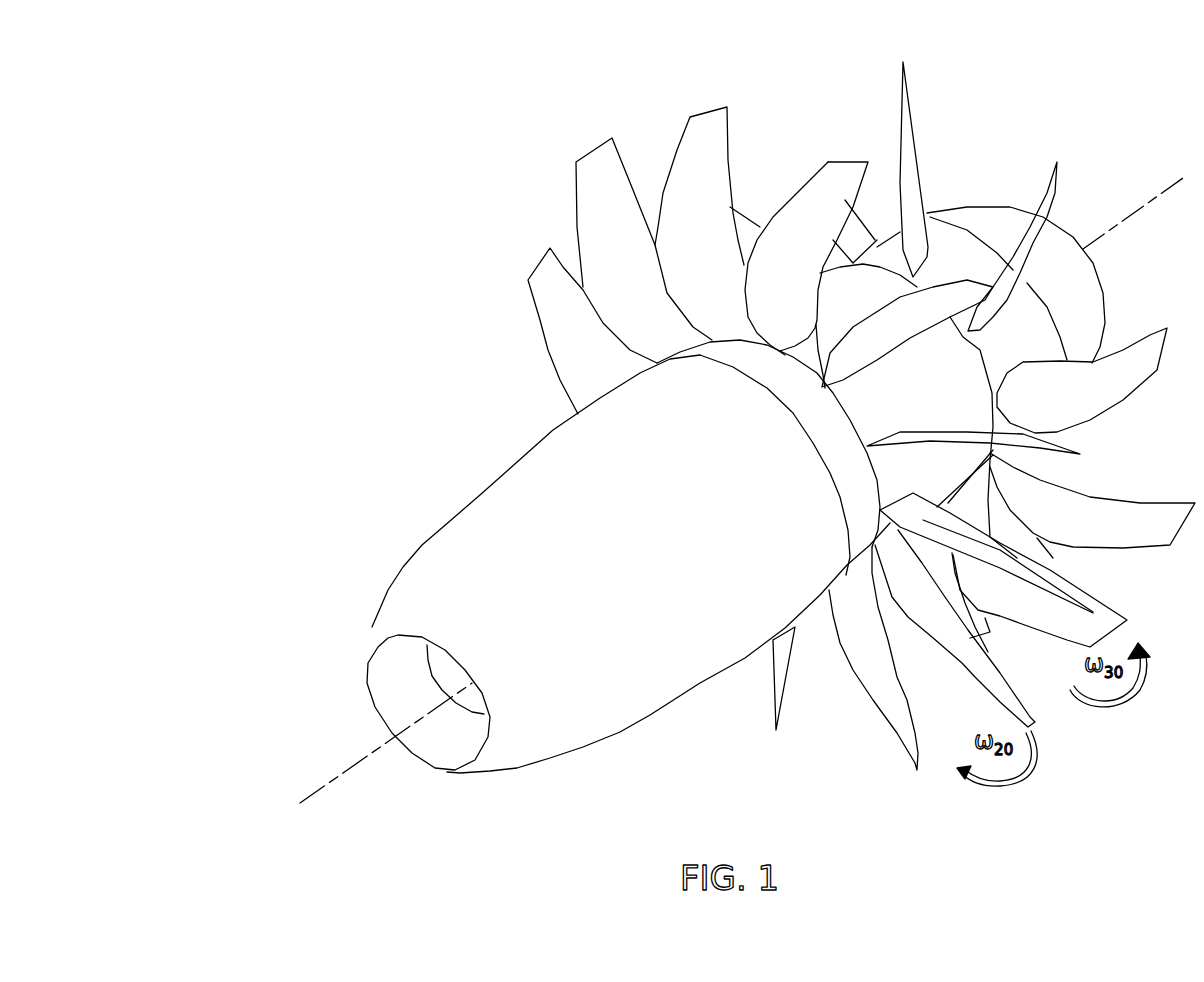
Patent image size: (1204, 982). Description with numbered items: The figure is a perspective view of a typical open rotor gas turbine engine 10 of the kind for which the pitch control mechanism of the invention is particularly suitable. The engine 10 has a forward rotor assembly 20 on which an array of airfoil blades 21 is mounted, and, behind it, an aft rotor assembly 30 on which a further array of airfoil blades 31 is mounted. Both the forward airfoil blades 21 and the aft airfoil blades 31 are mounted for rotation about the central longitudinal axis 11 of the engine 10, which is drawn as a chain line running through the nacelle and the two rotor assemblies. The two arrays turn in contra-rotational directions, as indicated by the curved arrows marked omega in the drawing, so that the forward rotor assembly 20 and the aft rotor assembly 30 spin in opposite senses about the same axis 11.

The open rotor gas turbine engine 10 is at (701, 425).
The central longitudinal axis 11 is at (319, 791).
The forward rotor assembly 20 is at (801, 438).
The airfoil blades 21 is at (553, 212).
The aft rotor assembly 30 is at (989, 303).
The airfoil blades 31 is at (861, 106).